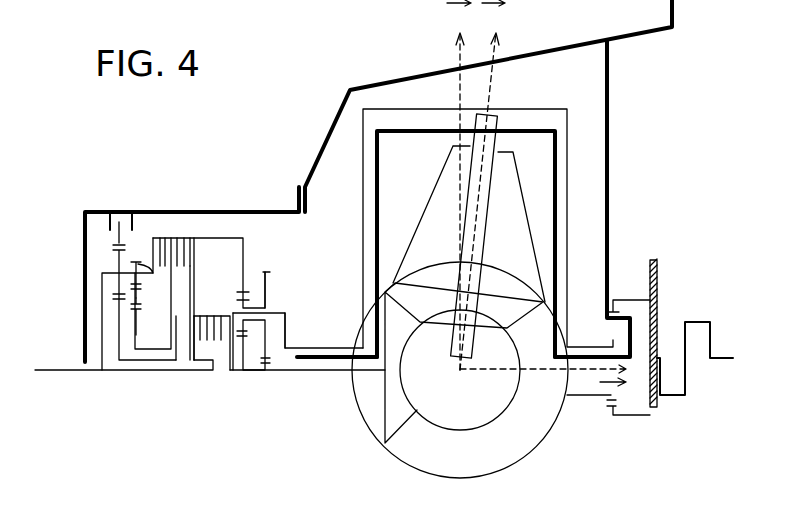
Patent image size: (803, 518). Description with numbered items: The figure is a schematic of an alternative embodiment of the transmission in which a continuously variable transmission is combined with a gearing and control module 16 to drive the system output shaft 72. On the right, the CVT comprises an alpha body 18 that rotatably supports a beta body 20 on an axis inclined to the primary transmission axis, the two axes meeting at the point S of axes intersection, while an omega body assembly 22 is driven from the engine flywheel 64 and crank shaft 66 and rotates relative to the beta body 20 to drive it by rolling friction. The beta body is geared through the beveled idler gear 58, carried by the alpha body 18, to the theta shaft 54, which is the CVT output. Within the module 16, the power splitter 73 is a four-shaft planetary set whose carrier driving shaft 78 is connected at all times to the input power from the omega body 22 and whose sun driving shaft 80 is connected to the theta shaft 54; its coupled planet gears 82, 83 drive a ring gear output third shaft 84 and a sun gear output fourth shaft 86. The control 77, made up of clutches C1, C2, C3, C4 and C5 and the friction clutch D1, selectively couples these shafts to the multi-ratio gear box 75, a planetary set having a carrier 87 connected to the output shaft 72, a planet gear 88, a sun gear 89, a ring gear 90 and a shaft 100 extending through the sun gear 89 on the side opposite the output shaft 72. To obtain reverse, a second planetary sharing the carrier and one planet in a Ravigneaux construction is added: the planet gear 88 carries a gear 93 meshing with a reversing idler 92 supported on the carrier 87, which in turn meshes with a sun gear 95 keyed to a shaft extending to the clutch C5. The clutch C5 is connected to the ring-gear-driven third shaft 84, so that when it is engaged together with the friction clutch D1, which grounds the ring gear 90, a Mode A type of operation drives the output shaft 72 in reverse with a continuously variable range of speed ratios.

The gearing and control module 16 is at (240, 218).
The alpha body 18 is at (556, 207).
The beta body 20 is at (469, 224).
The omega body assembly 22 is at (543, 109).
The theta shaft 54 is at (368, 373).
The idler gear 58 is at (460, 370).
The flywheel 64 is at (653, 259).
The crank shaft 66 is at (685, 322).
The system output shaft 72 is at (62, 362).
The power splitter 73 is at (286, 293).
The multi-ratio gear box 75 is at (104, 260).
The control 77 is at (191, 382).
The carrier driving shaft 78 is at (345, 347).
The sun driving shaft 80 is at (293, 372).
The planet gear 82 is at (269, 272).
The planet gear 83 is at (252, 322).
The ring gear output shaft 84 is at (243, 262).
The sun gear output shaft 86 is at (238, 352).
The carrier 87 is at (100, 276).
The planet gear 88 is at (120, 280).
The sun gear 89 is at (118, 316).
The ring gear 90 is at (88, 221).
The reversing idler 92 is at (155, 340).
The gear 93 is at (153, 268).
The sun gear 95 is at (116, 325).
The shaft 100 is at (173, 371).
The clutch C1 is at (196, 232).
The clutch C2 is at (197, 316).
The clutch C3 is at (153, 238).
The clutch C4 is at (226, 316).
The clutch C5 is at (178, 232).
The friction clutch D1 is at (133, 210).
The point of axes intersection S is at (460, 368).